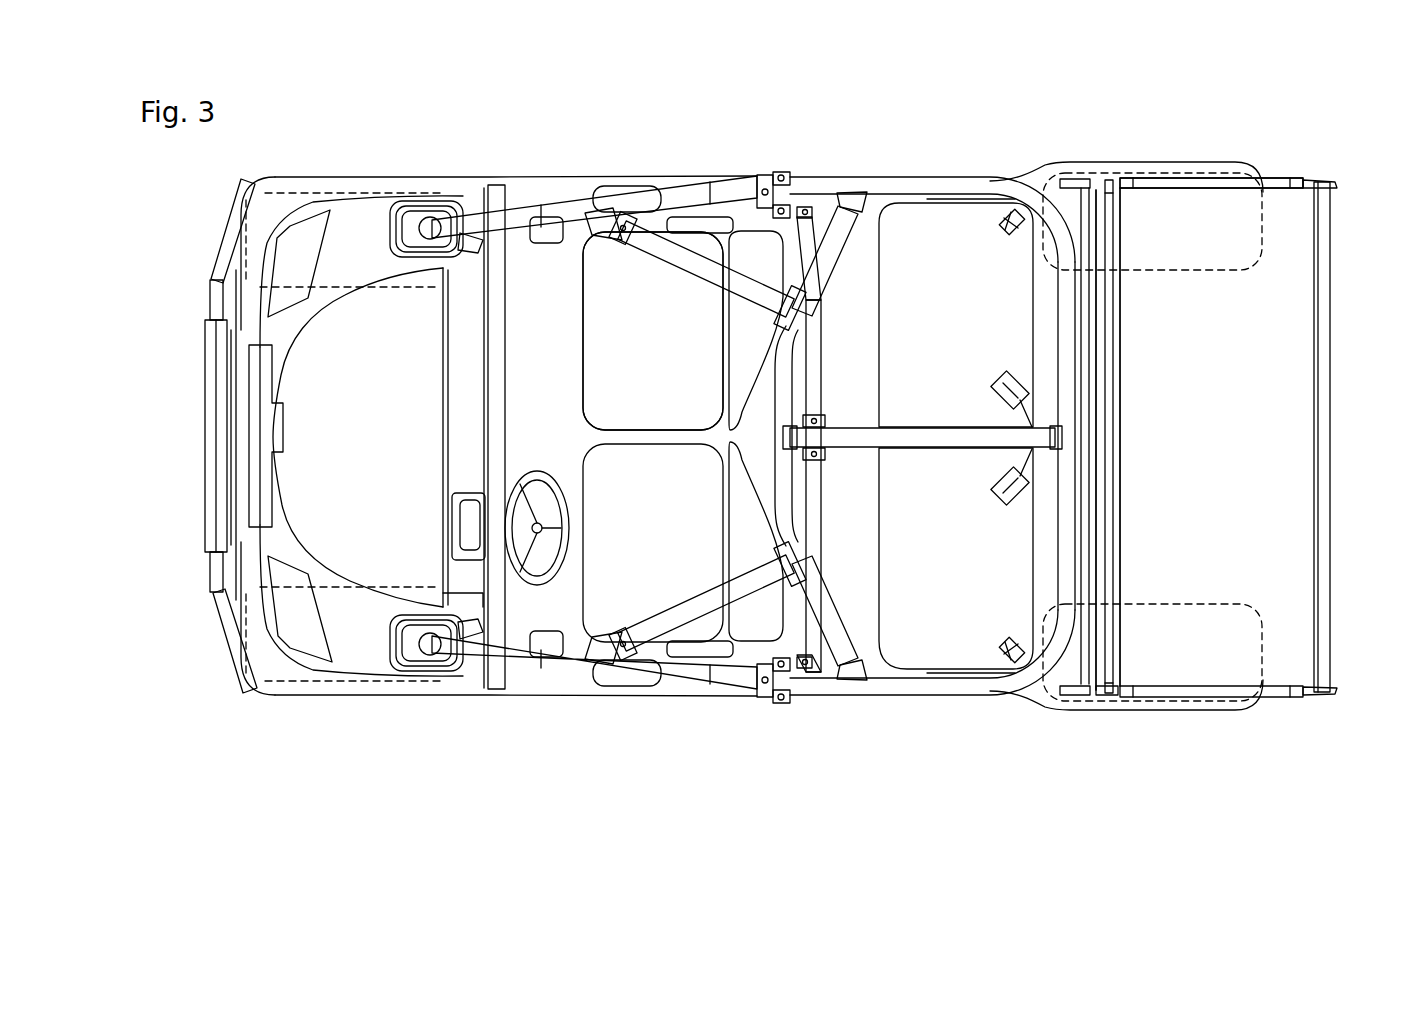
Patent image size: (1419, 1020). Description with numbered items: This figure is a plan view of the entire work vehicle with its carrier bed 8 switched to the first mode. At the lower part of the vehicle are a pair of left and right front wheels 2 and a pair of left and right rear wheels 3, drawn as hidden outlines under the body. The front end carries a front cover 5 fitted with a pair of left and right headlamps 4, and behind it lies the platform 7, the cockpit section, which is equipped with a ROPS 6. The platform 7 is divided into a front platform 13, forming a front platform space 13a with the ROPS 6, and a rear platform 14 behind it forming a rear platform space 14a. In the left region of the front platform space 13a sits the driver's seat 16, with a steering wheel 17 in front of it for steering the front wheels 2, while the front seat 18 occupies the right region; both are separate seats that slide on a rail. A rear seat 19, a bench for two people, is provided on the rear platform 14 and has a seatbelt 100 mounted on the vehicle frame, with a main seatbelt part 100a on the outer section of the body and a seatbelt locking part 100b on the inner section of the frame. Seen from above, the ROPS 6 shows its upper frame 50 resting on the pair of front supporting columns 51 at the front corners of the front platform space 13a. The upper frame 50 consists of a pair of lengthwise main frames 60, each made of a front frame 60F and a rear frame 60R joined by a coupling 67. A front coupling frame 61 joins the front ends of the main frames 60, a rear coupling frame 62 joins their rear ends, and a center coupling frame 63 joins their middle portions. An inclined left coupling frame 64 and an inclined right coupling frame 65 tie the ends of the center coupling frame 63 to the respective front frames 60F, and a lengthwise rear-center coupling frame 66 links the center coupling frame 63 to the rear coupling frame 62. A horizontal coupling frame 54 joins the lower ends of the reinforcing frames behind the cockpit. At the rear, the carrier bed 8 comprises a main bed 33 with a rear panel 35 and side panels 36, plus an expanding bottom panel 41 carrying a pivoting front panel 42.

The front wheels 2 is at (346, 188).
The rear wheels 3 is at (1090, 165).
The headlamps 4 is at (298, 252).
The front cover 5 is at (317, 427).
The ROPS 6 is at (452, 412).
The platform 7 is at (824, 389).
The carrier bed 8 is at (1211, 137).
The front platform 13 is at (658, 205).
The front platform space 13a is at (633, 397).
The rear platform 14 is at (1012, 183).
The rear platform space 14a is at (926, 397).
The driver's seat 16 is at (593, 610).
The steering wheel 17 is at (530, 467).
The front seat 18 is at (593, 303).
The rear seat 19 is at (885, 522).
The main bed 33 is at (1178, 176).
The rear panel 35 is at (1330, 440).
The side panels 36 is at (1232, 185).
The expanding bottom panel 41 is at (1100, 540).
The front panel 42 is at (1122, 380).
The upper frame 50 is at (853, 251).
The front supporting columns 51 is at (393, 238).
The coupling frame 54 is at (815, 372).
The main frames 60 is at (753, 440).
The front frames 60F is at (575, 212).
The rear frames 60R is at (925, 180).
The front coupling frame 61 is at (500, 355).
The rear coupling frame 62 is at (1065, 317).
The center coupling frame 63 is at (778, 368).
The left coupling frame 64 is at (672, 620).
The right coupling frame 65 is at (672, 252).
The rear-center coupling frame 66 is at (915, 450).
The coupling 67 is at (765, 174).
The seatbelt 100 is at (965, 435).
The main seatbelt part 100a is at (1002, 238).
The seatbelt locking part 100b is at (1000, 382).